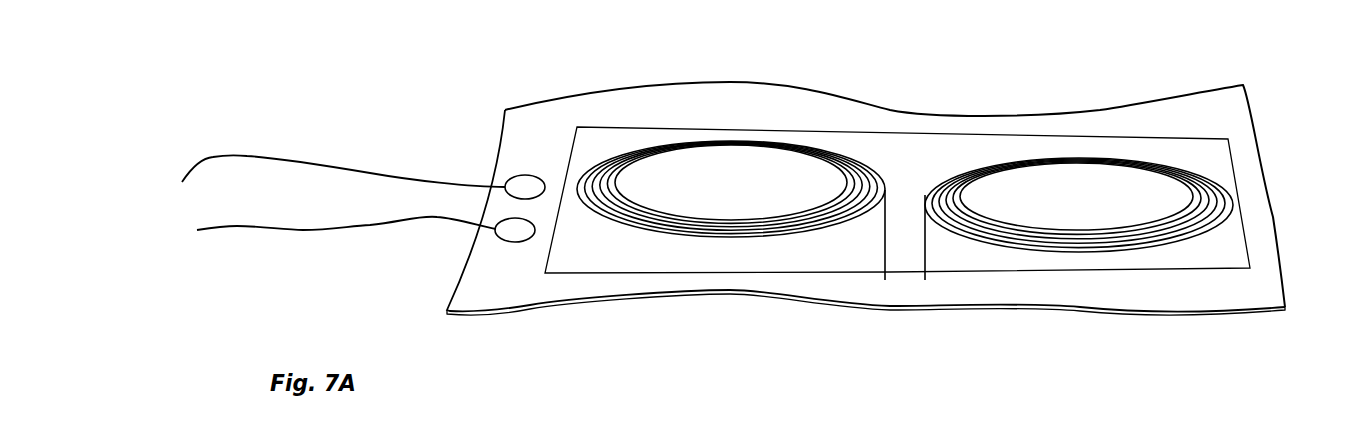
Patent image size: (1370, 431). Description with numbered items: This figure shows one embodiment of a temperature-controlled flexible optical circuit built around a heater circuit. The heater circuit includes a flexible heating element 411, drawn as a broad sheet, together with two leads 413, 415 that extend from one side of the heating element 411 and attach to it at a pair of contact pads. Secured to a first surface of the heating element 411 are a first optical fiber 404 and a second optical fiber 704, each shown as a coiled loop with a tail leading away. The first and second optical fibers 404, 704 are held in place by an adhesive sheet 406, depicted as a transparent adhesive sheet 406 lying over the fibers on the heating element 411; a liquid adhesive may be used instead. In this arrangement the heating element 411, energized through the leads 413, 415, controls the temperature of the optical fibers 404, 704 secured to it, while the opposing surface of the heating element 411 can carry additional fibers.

The heating element 411 is at (768, 115).
The adhesive sheet 406 is at (1237, 248).
The first optical fiber 404 is at (693, 230).
The second optical fiber 704 is at (1043, 247).
The lead 413 is at (282, 158).
The lead 415 is at (247, 228).